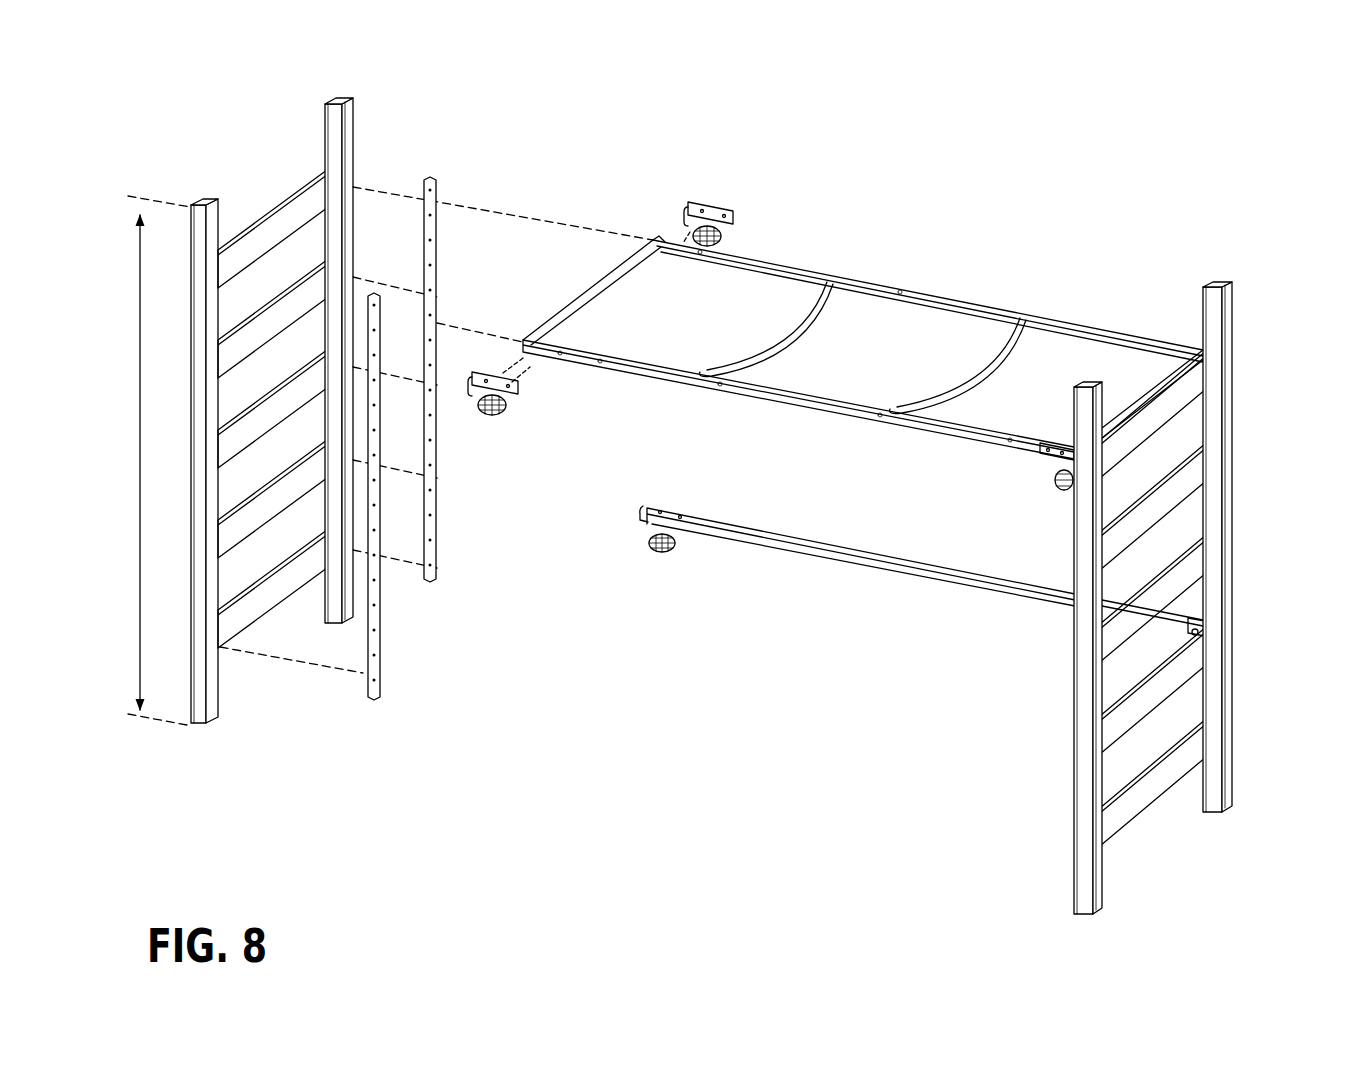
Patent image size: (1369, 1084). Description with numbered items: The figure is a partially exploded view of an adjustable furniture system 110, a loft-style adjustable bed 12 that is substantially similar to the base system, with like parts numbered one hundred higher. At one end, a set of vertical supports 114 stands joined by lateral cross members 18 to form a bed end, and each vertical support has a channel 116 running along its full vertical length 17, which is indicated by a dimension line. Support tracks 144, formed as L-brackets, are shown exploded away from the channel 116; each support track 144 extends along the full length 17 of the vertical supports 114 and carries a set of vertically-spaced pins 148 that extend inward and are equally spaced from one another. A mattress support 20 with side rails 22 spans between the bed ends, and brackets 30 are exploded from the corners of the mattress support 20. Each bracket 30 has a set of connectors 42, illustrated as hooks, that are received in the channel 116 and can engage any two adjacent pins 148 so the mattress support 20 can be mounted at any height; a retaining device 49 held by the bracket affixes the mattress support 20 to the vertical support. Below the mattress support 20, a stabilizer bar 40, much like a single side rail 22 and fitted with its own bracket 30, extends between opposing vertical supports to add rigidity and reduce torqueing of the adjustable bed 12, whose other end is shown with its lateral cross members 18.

The adjustable furniture system 110 is at (824, 94).
The adjustable bed 12 is at (887, 528).
The set of vertical supports 114 is at (315, 382).
The channel 116 is at (350, 102).
The vertical length 17 is at (137, 455).
The set of vertically-spaced pins 148 is at (434, 300).
The support track 144 is at (438, 562).
The mattress support 20 is at (863, 349).
The side rail 22 is at (980, 297).
The bracket 30 is at (718, 195).
The set of connectors 42 is at (510, 409).
The retaining device 49 is at (506, 405).
The stabilizer bar 40 is at (830, 555).
The lateral cross member 18 is at (1197, 568).